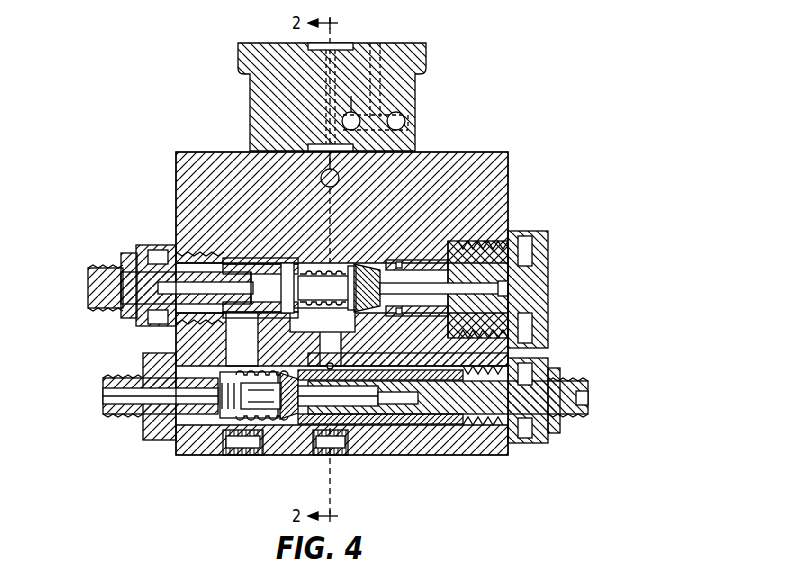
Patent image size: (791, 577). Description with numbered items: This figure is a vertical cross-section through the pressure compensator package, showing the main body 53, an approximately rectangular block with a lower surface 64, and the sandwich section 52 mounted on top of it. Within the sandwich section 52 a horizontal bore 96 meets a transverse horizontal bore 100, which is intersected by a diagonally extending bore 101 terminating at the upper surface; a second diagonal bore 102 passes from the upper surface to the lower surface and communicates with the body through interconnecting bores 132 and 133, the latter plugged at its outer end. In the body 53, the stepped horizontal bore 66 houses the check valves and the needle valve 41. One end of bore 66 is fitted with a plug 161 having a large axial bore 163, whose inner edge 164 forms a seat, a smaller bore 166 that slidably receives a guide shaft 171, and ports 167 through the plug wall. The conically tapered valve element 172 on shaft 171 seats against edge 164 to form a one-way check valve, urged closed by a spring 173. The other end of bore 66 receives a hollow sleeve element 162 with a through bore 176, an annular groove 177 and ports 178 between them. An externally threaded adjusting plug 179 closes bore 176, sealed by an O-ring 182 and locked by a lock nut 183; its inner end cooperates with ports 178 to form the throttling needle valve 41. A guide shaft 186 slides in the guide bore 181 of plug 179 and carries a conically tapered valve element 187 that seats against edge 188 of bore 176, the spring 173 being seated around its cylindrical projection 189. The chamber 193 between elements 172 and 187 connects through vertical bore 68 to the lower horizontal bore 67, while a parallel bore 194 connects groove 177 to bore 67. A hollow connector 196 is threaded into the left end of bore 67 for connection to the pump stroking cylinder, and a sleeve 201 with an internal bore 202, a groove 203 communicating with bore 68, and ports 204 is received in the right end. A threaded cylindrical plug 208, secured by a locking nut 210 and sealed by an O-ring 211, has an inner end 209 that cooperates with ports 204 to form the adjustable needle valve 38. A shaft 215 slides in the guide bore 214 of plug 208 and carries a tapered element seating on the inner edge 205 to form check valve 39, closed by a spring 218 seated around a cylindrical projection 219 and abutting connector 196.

The needle valve 38 is at (340, 422).
The check valve 39 is at (285, 440).
The needle valve 41 is at (222, 243).
The sandwich section 52 is at (243, 77).
The main body 53 is at (160, 168).
The lower surface 64 is at (485, 447).
The horizontal bore 66 is at (425, 233).
The horizontal bore 67 is at (428, 361).
The vertical bore 68 is at (355, 338).
The horizontal bore 96 is at (351, 102).
The transverse horizontal bore 100 is at (397, 111).
The diagonally extending bore 101 is at (365, 45).
The second diagonal bore 102 is at (318, 54).
The interconnecting bore 132 is at (331, 164).
The interconnecting bore 133 is at (313, 174).
The plug 161 is at (530, 268).
The hollow sleeve element 162 is at (145, 240).
The axial bore 163 is at (388, 255).
The inner edge 164 is at (350, 258).
The smaller diameter bore 166 is at (525, 283).
The ports 167 is at (440, 318).
The guide shaft 171 is at (474, 280).
The conically tapered valve element 172 is at (358, 284).
The spring 173 is at (330, 262).
The through bore 176 is at (264, 250).
The annular groove 177 is at (205, 332).
The ports 178 is at (240, 256).
The adjusting plug 179 is at (85, 272).
The guide bore 181 is at (118, 302).
The O-ring 182 is at (168, 312).
The lock nut 183 is at (114, 251).
The guide shaft 186 is at (158, 277).
The conically tapered valve element 187 is at (283, 255).
The edge 188 is at (273, 331).
The cylindrical projection 189 is at (325, 274).
The chamber 193 is at (340, 310).
The bore 194 is at (241, 331).
The hollow connector 196 is at (150, 366).
The sleeve 201 is at (535, 355).
The internal bore 202 is at (275, 372).
The groove 203 is at (388, 361).
The ports 204 is at (325, 455).
The inner edge 205 is at (292, 414).
The cylindrical plug 208 is at (560, 396).
The inner end 209 is at (340, 366).
The locking nut 210 is at (548, 420).
The O-ring 211 is at (360, 408).
The guide bore 214 is at (395, 394).
The shaft 215 is at (388, 385).
The spring 218 is at (224, 372).
The cylindrical projection 219 is at (262, 420).